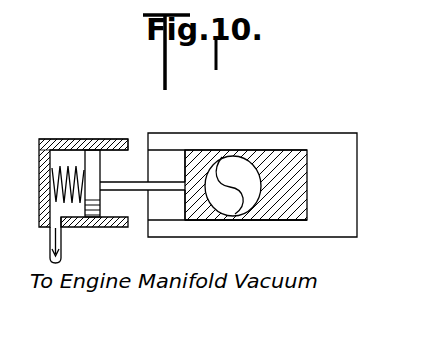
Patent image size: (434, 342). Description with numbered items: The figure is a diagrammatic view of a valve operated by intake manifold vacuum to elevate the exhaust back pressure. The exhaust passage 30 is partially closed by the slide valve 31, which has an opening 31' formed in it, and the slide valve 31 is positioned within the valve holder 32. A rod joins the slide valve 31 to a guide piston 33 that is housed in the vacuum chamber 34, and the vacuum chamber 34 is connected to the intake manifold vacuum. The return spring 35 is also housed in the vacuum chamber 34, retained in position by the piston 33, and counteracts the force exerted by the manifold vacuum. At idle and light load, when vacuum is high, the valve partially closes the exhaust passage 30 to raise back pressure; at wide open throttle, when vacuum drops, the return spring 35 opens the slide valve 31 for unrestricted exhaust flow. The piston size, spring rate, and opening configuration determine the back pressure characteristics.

The exhaust passage 30 is at (235, 214).
The slide valve 31 is at (253, 160).
The opening 31' is at (233, 158).
The valve holder 32 is at (342, 182).
The guide piston 33 is at (100, 150).
The vacuum chamber 34 is at (64, 150).
The return spring 35 is at (50, 206).